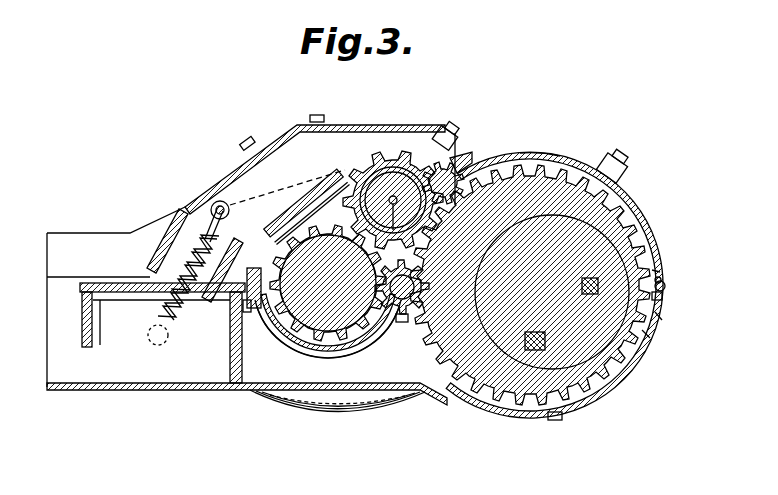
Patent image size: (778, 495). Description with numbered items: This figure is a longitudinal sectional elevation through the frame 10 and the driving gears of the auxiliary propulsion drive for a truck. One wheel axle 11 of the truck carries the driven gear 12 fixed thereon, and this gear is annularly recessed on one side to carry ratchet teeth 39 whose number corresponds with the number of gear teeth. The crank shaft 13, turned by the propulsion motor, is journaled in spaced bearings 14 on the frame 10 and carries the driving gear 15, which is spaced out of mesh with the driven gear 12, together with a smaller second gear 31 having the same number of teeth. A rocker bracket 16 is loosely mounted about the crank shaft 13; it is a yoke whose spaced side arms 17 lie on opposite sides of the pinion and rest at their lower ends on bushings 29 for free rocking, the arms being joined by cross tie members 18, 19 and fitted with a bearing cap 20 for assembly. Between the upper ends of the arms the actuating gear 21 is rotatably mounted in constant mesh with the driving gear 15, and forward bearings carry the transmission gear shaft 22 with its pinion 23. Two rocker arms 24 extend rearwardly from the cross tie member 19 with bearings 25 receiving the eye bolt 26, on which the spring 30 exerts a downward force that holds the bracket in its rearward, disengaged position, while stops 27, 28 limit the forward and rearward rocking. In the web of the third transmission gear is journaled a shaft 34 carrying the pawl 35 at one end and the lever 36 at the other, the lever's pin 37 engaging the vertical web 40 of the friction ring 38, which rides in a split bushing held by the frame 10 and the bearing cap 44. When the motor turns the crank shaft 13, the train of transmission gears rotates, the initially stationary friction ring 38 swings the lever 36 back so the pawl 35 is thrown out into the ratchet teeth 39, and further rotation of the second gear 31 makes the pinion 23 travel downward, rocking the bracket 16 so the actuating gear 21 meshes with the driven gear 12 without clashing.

The frame 10 is at (385, 394).
The wheel axle 11 is at (640, 216).
The driven gear 12 is at (600, 396).
The crank shaft 13 is at (312, 334).
The bearings 14 is at (272, 392).
The driving gear 15 is at (312, 396).
The rocker bracket 16 is at (341, 185).
The side arms 17 is at (315, 190).
The cross tie member 18 is at (470, 165).
The cross tie member 19 is at (285, 210).
The bearing cap 20 is at (237, 385).
The actuating gear 21 is at (395, 165).
The transmission gear shaft 22 is at (403, 316).
The pinion 23 is at (372, 330).
The rocker arms 24 is at (236, 200).
The bearings 25 is at (205, 214).
The eye bolt 26 is at (180, 222).
The stop 27 is at (540, 152).
The stop 28 is at (216, 200).
The bushings 29 is at (357, 396).
The spring 30 is at (160, 312).
The second gear 31 is at (283, 418).
The shaft 34 is at (660, 318).
The pawl 35 is at (648, 335).
The lever 36 is at (660, 280).
The pin 37 is at (662, 284).
The friction ring 38 is at (665, 298).
The ratchet teeth 39 is at (630, 195).
The vertical web 40 is at (658, 275).
The bearing cap 44 is at (555, 416).